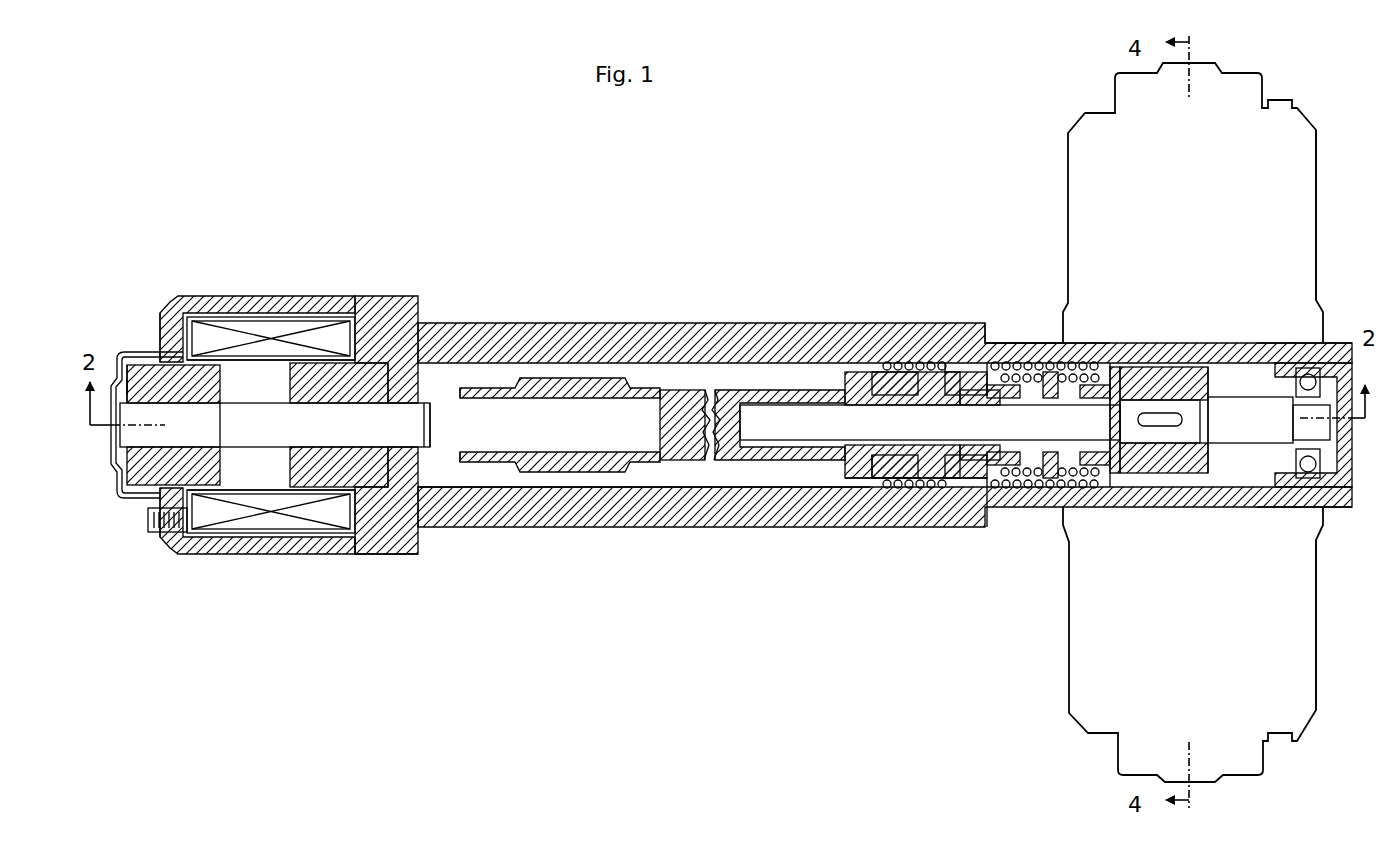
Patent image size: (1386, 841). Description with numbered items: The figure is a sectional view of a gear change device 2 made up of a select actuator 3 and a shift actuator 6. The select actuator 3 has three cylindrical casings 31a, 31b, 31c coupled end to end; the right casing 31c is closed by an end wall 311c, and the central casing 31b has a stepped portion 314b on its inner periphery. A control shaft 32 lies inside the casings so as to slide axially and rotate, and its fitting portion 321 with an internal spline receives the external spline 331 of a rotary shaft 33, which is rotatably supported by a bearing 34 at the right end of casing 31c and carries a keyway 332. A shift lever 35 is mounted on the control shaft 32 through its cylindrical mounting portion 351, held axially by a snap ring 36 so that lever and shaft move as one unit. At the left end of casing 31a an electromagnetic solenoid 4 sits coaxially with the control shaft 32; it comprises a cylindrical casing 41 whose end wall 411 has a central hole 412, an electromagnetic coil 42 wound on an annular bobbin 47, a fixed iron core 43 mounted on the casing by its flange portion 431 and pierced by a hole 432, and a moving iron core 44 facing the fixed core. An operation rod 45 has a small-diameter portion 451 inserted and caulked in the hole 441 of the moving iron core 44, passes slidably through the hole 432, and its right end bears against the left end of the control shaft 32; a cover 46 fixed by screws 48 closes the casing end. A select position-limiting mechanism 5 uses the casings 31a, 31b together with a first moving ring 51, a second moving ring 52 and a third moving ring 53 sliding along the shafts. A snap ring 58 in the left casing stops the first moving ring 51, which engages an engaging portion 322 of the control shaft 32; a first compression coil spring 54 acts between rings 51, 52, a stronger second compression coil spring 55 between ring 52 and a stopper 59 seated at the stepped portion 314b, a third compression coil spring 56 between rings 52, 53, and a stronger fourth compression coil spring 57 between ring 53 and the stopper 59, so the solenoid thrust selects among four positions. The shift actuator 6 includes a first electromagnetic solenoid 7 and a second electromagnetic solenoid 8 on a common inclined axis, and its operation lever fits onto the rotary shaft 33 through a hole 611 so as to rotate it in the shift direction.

The gear change device 2 is at (998, 195).
The select actuator 3 is at (901, 396).
The electromagnetic solenoid 4 is at (247, 413).
The select position-limiting mechanism 5 is at (996, 400).
The shift actuator 6 is at (1328, 230).
The first electromagnetic solenoid 7 is at (1316, 684).
The second electromagnetic solenoid 8 is at (1318, 182).
The casing 31a is at (742, 326).
The central casing 31b is at (986, 343).
The casing 31c is at (1290, 343).
The end wall 311c is at (1342, 507).
The stepped portion 314b is at (1115, 362).
The control shaft 32 is at (688, 390).
The fitting portion 321 is at (798, 372).
The engaging portion 322 is at (855, 478).
The rotary shaft 33 is at (1240, 410).
The external spline 331 is at (848, 405).
The keyway 332 is at (1202, 400).
The bearing 34 is at (1330, 368).
The shift lever 35 is at (588, 490).
The mounting portion 351 is at (572, 378).
The snap ring 36 is at (458, 390).
The cylindrical casing 41 is at (240, 296).
The end wall 411 is at (162, 345).
The hole 412 is at (138, 498).
The electromagnetic coil 42 is at (308, 325).
The fixed iron core 43 is at (318, 487).
The flange portion 431 is at (372, 296).
The hole 432 is at (350, 554).
The moving iron core 44 is at (150, 365).
The hole 441 is at (130, 412).
The operation rod 45 is at (268, 447).
The small-diameter portion 451 is at (136, 350).
The cover 46 is at (114, 455).
The annular bobbin 47 is at (234, 533).
The screws 48 is at (152, 532).
The first moving ring 51 is at (915, 372).
The second moving ring 52 is at (975, 368).
The third moving ring 53 is at (1045, 372).
The first compression coil spring 54 is at (905, 485).
The second compression coil spring 55 is at (950, 507).
The third compression coil spring 56 is at (1030, 487).
The fourth compression coil spring 57 is at (1060, 487).
The snap ring 58 is at (888, 362).
The stopper 59 is at (1104, 362).
The hole 611 is at (1160, 412).